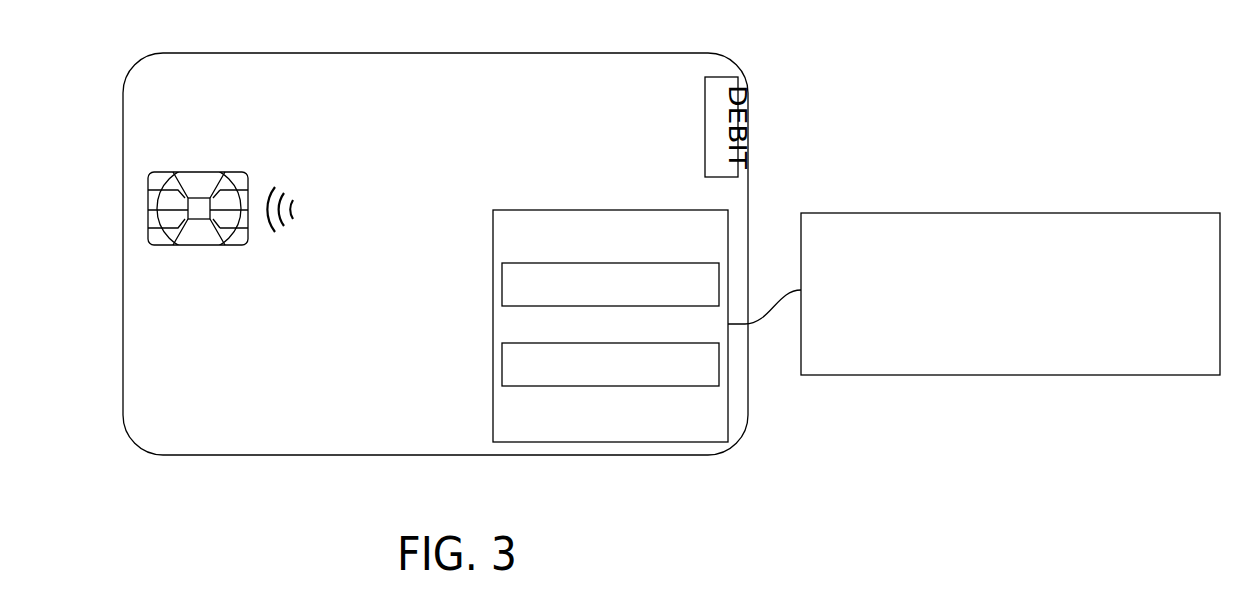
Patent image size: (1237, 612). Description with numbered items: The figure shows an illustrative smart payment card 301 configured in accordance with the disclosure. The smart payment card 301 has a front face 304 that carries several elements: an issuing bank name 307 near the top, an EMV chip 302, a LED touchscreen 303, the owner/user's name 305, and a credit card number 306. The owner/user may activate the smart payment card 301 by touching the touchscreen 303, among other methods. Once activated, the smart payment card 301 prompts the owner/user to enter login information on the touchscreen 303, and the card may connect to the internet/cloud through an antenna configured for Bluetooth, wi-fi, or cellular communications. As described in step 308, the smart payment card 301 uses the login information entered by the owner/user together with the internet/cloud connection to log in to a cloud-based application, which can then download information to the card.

The smart payment card 301 is at (433, 53).
The EMV chip 302 is at (162, 173).
The LED touchscreen 303 is at (583, 210).
The front face 304 is at (145, 350).
The owner/user's name 305 is at (150, 415).
The credit card number 306 is at (150, 293).
The issuing bank name 307 is at (645, 73).
The step 308 is at (950, 213).